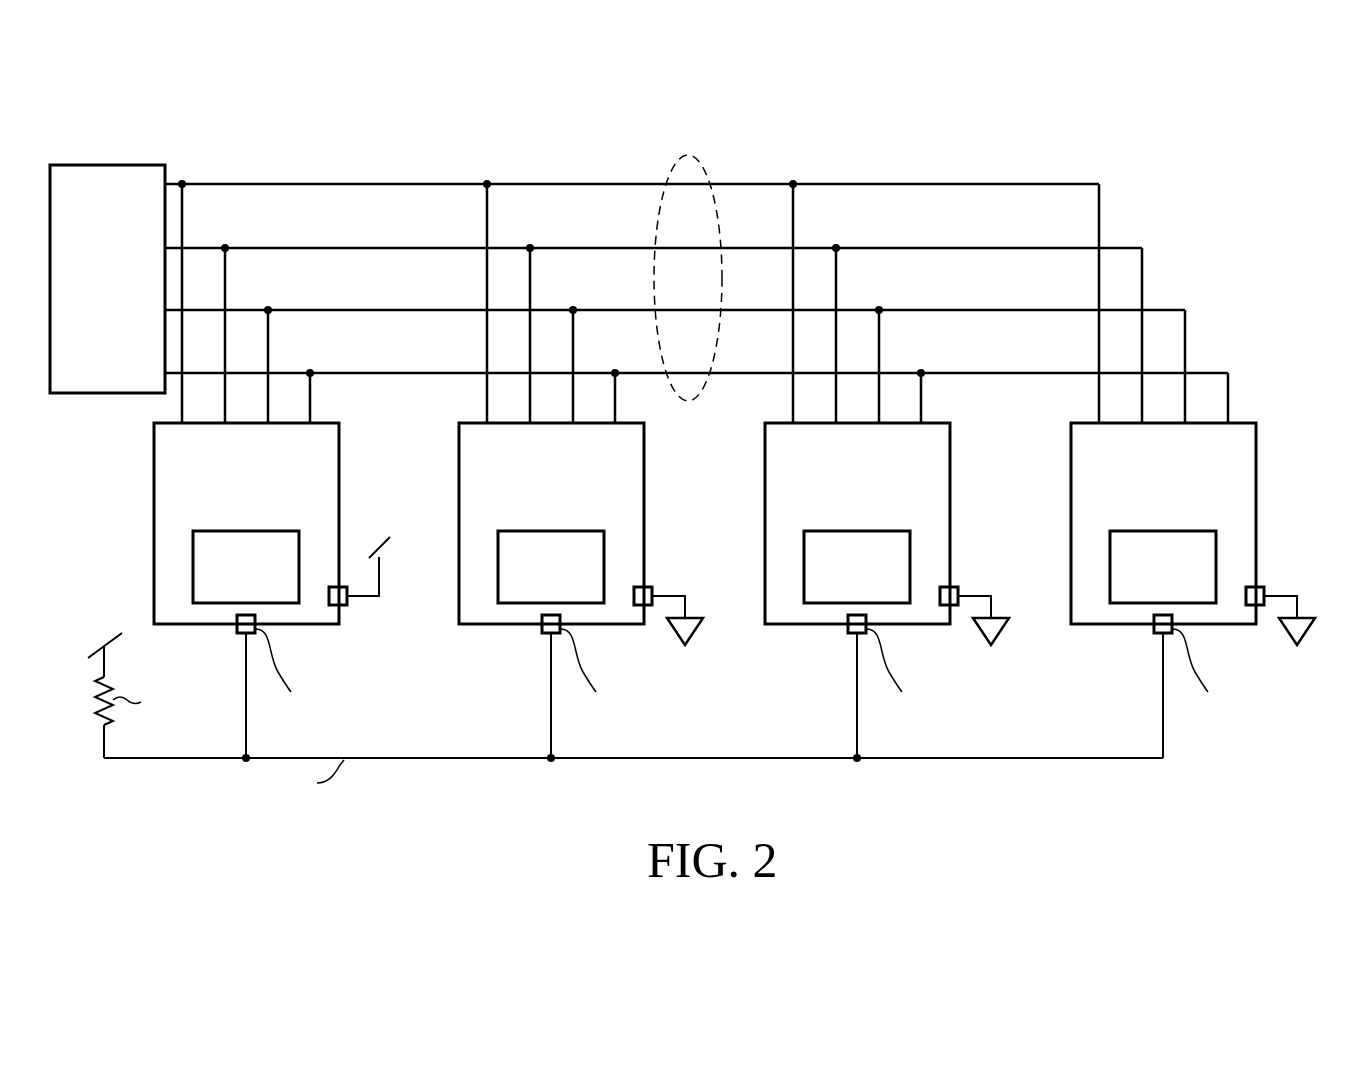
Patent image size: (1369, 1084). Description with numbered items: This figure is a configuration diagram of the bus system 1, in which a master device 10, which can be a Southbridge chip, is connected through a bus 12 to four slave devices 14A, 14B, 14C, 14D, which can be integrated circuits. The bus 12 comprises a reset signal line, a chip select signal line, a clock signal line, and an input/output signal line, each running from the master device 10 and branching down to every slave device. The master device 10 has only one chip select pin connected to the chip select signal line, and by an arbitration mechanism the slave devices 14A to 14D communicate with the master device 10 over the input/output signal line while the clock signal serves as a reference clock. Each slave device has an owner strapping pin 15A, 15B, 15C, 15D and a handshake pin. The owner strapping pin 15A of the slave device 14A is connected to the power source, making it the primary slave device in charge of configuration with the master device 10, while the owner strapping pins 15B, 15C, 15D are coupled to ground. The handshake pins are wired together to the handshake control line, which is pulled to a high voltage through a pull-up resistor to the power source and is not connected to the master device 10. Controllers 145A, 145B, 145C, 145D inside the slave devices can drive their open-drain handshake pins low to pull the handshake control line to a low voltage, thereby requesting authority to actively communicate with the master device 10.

The bus system 1 is at (703, 458).
The master device 10 is at (50, 165).
The bus 12 is at (686, 160).
The slave device 14A is at (297, 471).
The slave device 14B is at (601, 471).
The slave device 14C is at (907, 471).
The slave device 14D is at (1214, 471).
The owner strapping pin 15A is at (347, 603).
The owner strapping pin 15B is at (646, 587).
The owner strapping pin 15C is at (952, 587).
The owner strapping pin 15D is at (1258, 587).
The controller 145A is at (208, 583).
The controller 145B is at (513, 583).
The controller 145C is at (819, 583).
The controller 145D is at (1125, 583).